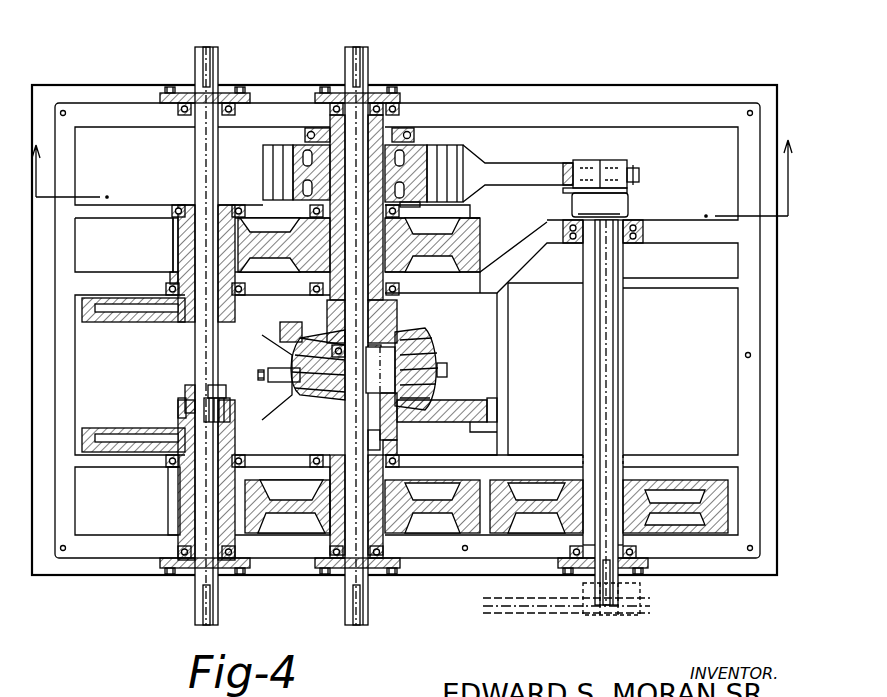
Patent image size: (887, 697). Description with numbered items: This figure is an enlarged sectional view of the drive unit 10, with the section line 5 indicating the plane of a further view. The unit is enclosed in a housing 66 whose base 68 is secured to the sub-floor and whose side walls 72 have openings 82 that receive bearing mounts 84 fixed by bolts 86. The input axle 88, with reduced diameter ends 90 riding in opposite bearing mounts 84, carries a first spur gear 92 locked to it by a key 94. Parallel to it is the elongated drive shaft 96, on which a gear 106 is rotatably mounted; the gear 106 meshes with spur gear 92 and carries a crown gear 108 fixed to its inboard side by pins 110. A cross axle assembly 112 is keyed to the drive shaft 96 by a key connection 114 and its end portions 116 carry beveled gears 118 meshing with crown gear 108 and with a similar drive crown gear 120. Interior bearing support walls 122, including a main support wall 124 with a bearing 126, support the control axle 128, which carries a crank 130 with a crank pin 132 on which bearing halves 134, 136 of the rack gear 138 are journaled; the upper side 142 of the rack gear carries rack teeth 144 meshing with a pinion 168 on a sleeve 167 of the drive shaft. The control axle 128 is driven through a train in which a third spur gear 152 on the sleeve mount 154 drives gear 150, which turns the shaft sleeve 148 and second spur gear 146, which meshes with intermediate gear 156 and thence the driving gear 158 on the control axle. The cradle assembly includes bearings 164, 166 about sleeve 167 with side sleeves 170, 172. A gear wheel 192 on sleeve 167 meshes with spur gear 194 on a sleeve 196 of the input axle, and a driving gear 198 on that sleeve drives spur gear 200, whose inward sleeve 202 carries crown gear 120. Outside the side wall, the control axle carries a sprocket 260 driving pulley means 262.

The section line 5- 5 is at (418, 171).
The drive unit 10 is at (655, 82).
The housing 66 is at (735, 85).
The base 68 is at (650, 452).
The side walls 72 is at (525, 107).
The openings 82 is at (185, 125).
The bearing mounts 84 is at (228, 99).
The bolts 86 is at (392, 97).
The input axle 88 is at (196, 356).
The reduced diameter ends 90 is at (214, 58).
The first spur gear 92 is at (180, 412).
The key 94 is at (186, 400).
The drive shaft 96 is at (395, 438).
The gear 106 is at (497, 410).
The crown gear 108 is at (435, 400).
The pins 110 is at (497, 432).
The cross axle assembly 112 is at (385, 367).
The key connection 114 is at (288, 362).
The end portions 116 is at (274, 377).
The beveled gears 118 is at (432, 380).
The drive crown gear 120 is at (403, 340).
The bearing support walls 122 is at (665, 292).
The main support wall 124 is at (705, 224).
The bearing 126 is at (630, 247).
The control axle 128 is at (598, 346).
The crank 130 is at (600, 205).
The crank pin 132 is at (627, 191).
The bearing half 134 is at (590, 162).
The bearing half 136 is at (628, 170).
The rack gear 138 is at (540, 186).
The upper side 142 is at (505, 182).
The rack teeth 144 is at (458, 170).
The second spur gear 146 is at (176, 499).
The shaft sleeve 148 is at (182, 519).
The gear 150 is at (112, 437).
The third spur gear 152 is at (398, 452).
The sleeve mount 154 is at (285, 414).
The intermediate gear 156 is at (322, 498).
The driving gear 158 is at (708, 494).
The bearing 164 is at (412, 130).
The bearing 166 is at (420, 211).
The sleeve 167 is at (340, 167).
The pinion 168 is at (465, 132).
The sleeve 170 is at (405, 128).
The sleeve 172 is at (305, 137).
The gear wheel 192 is at (278, 242).
The spur gear 194 is at (175, 245).
The sleeve 196 is at (172, 282).
The driving gear 198 is at (98, 314).
The spur gear 200 is at (398, 308).
The inward sleeve 202 is at (300, 330).
The sprocket 260 is at (616, 620).
The pulley means 262 is at (540, 620).